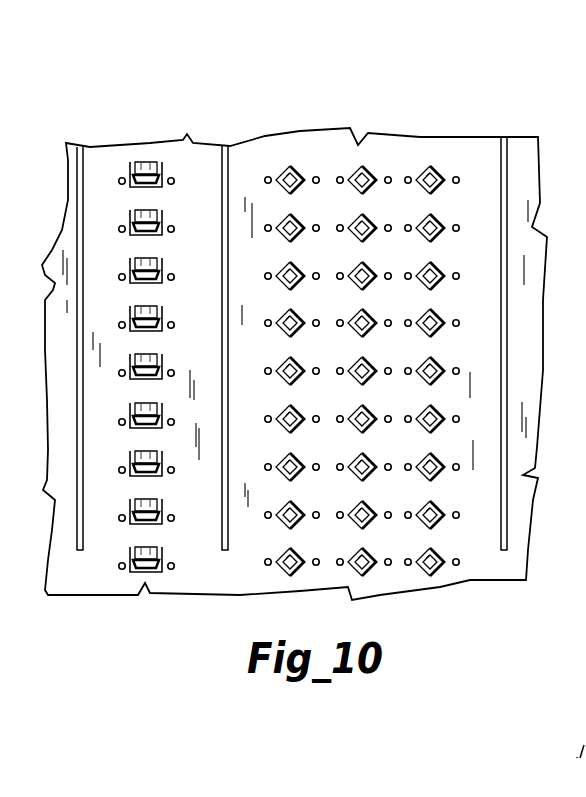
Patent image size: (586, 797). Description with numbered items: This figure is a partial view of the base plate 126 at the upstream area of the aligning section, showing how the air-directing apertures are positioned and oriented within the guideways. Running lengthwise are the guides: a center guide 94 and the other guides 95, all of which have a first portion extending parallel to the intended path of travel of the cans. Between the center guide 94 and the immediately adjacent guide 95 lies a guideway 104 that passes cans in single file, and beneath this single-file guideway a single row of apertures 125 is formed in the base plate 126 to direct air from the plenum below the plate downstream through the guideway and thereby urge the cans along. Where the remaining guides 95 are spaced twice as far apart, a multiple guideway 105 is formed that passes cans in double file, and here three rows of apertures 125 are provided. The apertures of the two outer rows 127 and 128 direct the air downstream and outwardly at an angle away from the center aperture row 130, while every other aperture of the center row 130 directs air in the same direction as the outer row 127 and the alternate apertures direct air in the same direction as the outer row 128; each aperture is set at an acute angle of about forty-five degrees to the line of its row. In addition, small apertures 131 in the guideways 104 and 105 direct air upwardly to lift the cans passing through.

The center guides 94 is at (82, 183).
The other guides 95 is at (506, 178).
The guideways 104 is at (205, 177).
The guideways 105 is at (483, 155).
The apertures 125 is at (145, 172).
The base plate 126 is at (225, 568).
The outer row 127 is at (288, 176).
The outer row 128 is at (434, 178).
The center aperture row 130 is at (362, 178).
The small apertures 131 is at (455, 562).